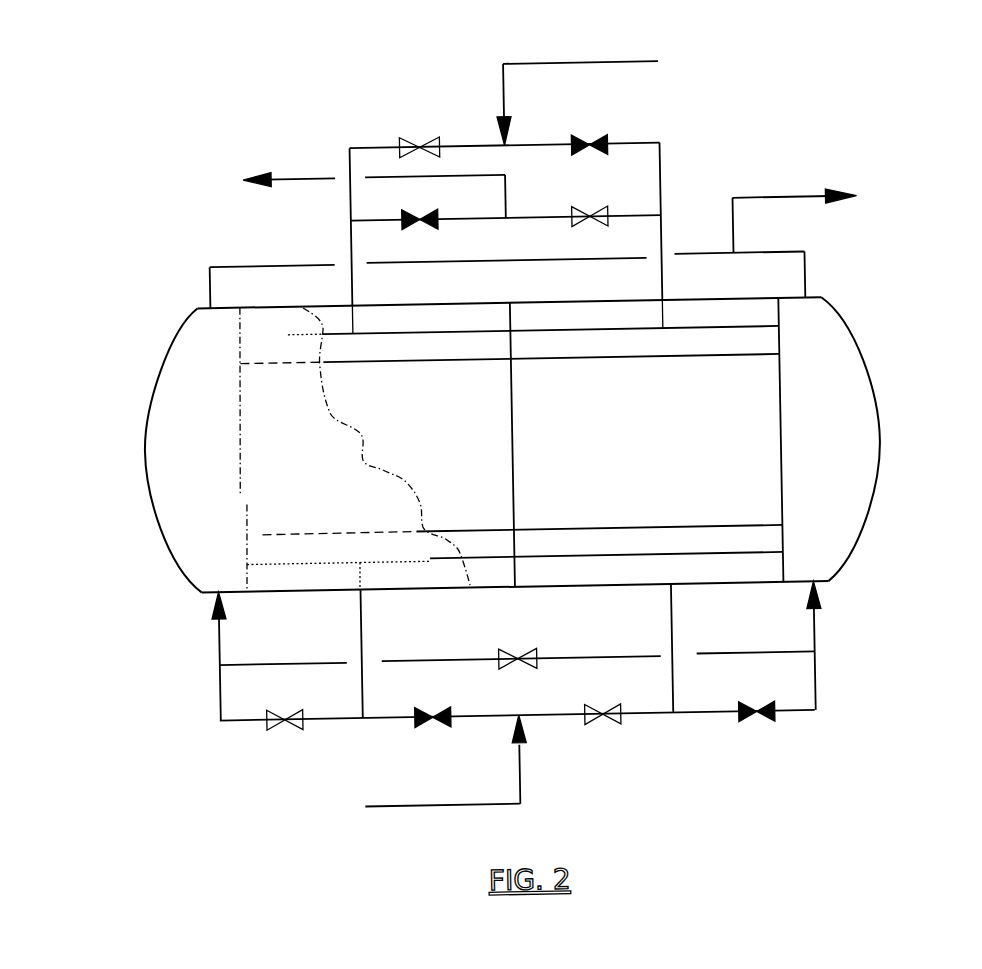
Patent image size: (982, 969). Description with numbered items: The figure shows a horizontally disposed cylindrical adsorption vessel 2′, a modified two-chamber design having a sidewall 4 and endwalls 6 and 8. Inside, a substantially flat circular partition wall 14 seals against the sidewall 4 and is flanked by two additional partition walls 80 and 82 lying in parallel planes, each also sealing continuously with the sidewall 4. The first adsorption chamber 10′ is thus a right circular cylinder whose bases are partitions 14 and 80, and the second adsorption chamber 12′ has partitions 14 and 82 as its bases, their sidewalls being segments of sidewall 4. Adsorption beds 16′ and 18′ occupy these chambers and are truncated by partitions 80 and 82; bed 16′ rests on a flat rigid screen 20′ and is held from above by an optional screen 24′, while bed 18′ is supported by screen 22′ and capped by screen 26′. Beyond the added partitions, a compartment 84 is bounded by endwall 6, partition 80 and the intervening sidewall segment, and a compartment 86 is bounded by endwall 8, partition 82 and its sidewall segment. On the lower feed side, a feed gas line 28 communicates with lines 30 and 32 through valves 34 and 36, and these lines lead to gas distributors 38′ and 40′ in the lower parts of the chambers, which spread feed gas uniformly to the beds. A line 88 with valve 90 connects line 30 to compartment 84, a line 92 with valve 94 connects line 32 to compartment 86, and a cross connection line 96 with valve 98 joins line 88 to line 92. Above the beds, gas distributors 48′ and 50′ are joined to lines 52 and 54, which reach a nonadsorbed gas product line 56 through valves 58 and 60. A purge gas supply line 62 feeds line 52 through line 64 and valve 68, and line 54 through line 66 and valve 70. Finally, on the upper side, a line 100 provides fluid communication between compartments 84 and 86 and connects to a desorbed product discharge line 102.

The vessel 2′ is at (885, 337).
The sidewall 4 is at (693, 300).
The endwall 6 is at (146, 414).
The endwall 8 is at (879, 405).
The first adsorption chamber 10′ is at (446, 442).
The second adsorption chamber 12′ is at (624, 437).
The partition wall 14 is at (514, 389).
The adsorption bed 16′ is at (278, 458).
The adsorption bed 18′ is at (760, 470).
The screen 20′ is at (492, 528).
The screen 22′ is at (629, 529).
The screen 24′ is at (369, 360).
The screen 26′ is at (632, 360).
The feed gas line 28 is at (511, 773).
The line 30 is at (362, 624).
The line 32 is at (672, 622).
The valve 34 is at (415, 726).
The valve 36 is at (588, 735).
The gas distributor 38′ is at (295, 559).
The gas distributor 40′ is at (581, 558).
The gas distributor 48′ is at (380, 331).
The gas distributor 50′ is at (627, 330).
The line 52 is at (354, 237).
The line 54 is at (671, 238).
The nonadsorbed gas product line 56 is at (332, 172).
The valve 58 is at (434, 229).
The valve 60 is at (583, 185).
The purge gas supply line 62 is at (514, 91).
The line 64 is at (378, 146).
The line 66 is at (665, 165).
The valve 68 is at (409, 138).
The valve 70 is at (611, 137).
The partition wall 80 is at (243, 400).
The partition wall 82 is at (784, 388).
The compartment 84 is at (192, 444).
The compartment 86 is at (825, 433).
The line 88 is at (214, 642).
The valve 90 is at (285, 723).
The line 92 is at (822, 645).
The valve 94 is at (762, 728).
The cross connection line 96 is at (719, 661).
The valve 98 is at (514, 667).
The line 100 is at (246, 262).
The desorbed product discharge line 102 is at (772, 205).